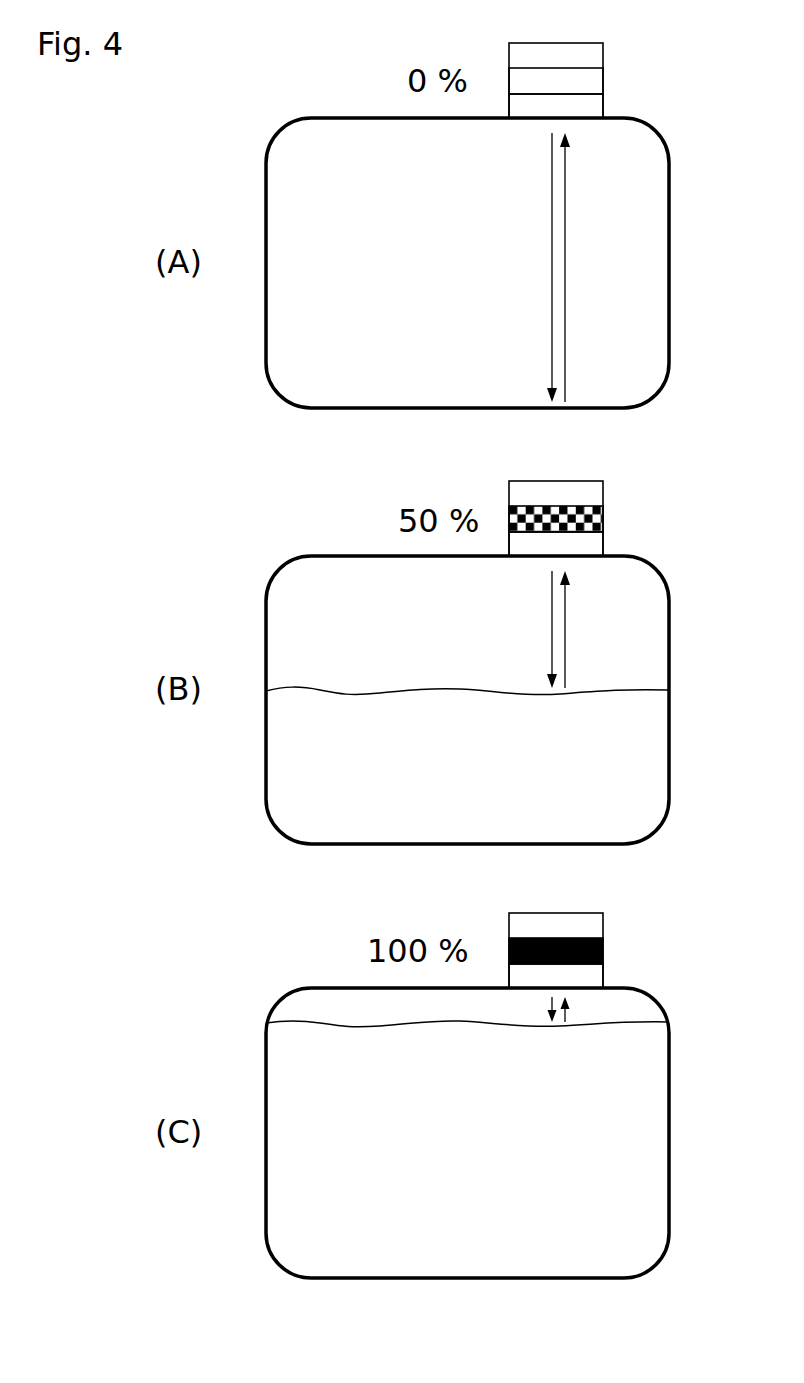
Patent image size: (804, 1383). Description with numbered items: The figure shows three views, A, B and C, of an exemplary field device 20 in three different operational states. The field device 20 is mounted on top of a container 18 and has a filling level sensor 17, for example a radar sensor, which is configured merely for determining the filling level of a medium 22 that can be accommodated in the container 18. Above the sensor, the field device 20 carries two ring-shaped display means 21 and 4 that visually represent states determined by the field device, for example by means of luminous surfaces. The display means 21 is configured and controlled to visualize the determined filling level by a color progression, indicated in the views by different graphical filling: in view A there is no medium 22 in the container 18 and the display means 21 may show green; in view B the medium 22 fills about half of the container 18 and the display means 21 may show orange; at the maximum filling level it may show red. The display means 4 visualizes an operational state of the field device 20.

The display means 4 is at (597, 53).
The display means 21 is at (597, 82).
The field device 20 is at (676, 111).
The filling level sensor 17 is at (533, 110).
The container 18 is at (266, 200).
The medium 22 is at (396, 797).